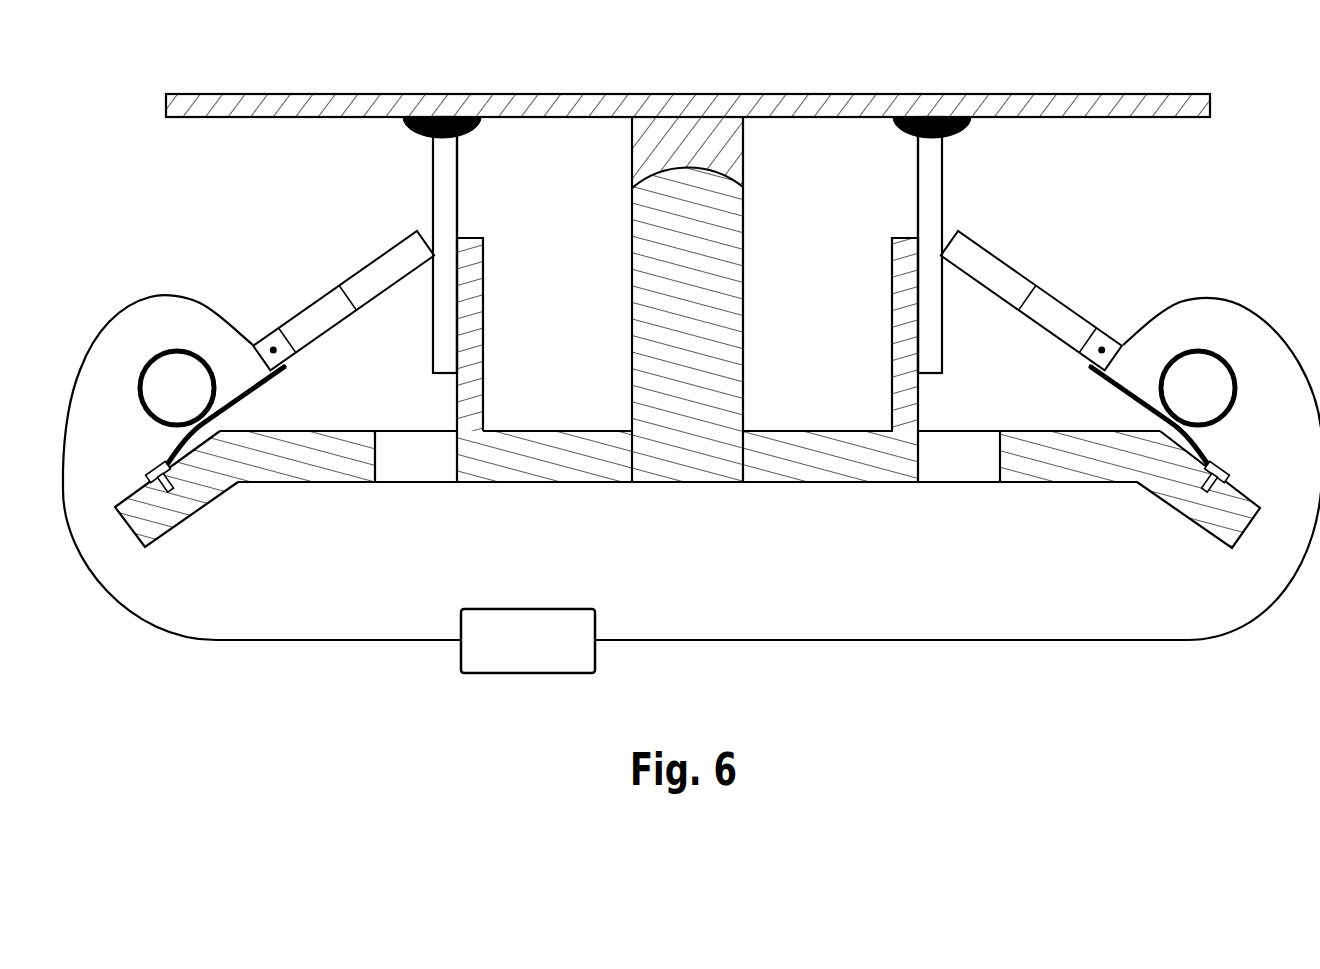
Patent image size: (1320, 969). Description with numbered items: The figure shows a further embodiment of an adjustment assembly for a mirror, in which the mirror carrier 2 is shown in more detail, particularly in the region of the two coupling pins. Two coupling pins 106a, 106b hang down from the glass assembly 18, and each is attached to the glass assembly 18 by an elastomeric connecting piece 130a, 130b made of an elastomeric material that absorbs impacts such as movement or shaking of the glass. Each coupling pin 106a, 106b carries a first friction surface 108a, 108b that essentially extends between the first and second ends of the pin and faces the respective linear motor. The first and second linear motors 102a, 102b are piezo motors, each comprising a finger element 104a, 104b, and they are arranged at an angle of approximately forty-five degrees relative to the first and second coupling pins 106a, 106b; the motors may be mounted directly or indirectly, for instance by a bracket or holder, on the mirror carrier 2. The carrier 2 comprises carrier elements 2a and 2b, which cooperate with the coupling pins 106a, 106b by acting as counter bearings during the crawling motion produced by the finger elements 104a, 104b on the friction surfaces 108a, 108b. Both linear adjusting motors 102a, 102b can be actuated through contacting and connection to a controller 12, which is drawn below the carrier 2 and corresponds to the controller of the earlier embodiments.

The mirror carrier 2 is at (812, 480).
The carrier element 2a is at (483, 322).
The carrier element 2b is at (892, 322).
The controller 12 is at (561, 648).
The glass assembly 18 is at (823, 107).
The first linear motor 102a is at (312, 251).
The second linear motor 102b is at (1063, 251).
The finger element 104a is at (385, 277).
The finger element 104b is at (990, 277).
The first coupling pin 106a is at (458, 187).
The second coupling pin 106b is at (917, 187).
The first friction surface 108a is at (433, 203).
The first friction surface 108b is at (942, 203).
The elastomeric connecting piece 130a is at (470, 128).
The elastomeric connecting piece 130b is at (905, 128).